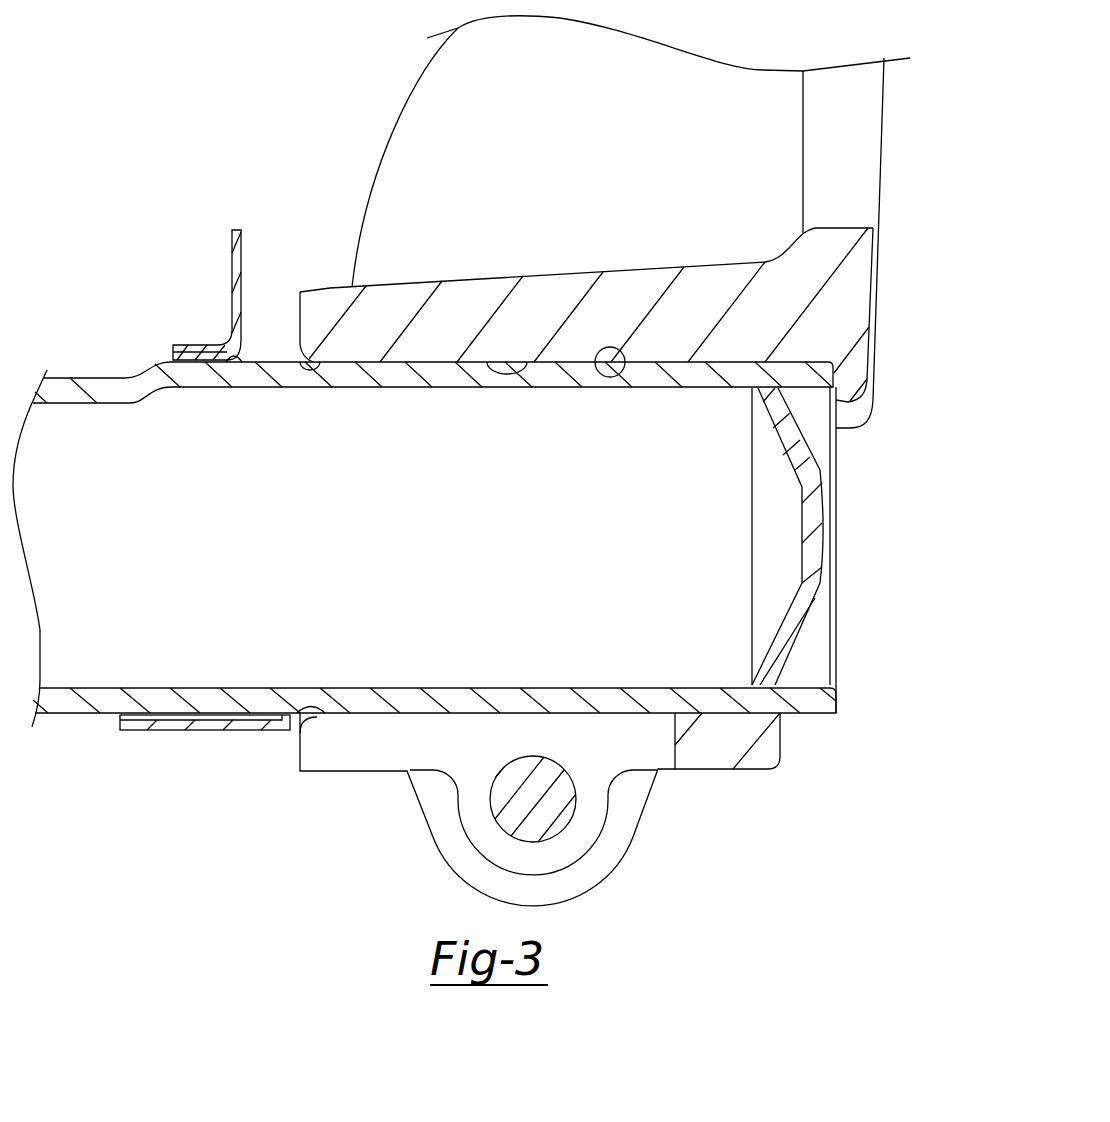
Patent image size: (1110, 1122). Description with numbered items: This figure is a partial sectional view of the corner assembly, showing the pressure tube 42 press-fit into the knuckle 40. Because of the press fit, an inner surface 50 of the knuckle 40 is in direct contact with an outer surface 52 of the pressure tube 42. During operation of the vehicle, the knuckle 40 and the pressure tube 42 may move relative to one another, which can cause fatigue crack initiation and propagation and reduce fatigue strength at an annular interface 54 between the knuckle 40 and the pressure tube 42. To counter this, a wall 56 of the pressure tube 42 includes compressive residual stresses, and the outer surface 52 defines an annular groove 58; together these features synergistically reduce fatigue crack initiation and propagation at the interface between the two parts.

The knuckle 40 is at (625, 290).
The pressure tube 42 is at (624, 372).
The inner surface 50 is at (283, 362).
The outer surface 52 is at (527, 362).
The annular interface 54 is at (410, 708).
The wall 56 is at (165, 700).
The annular groove 58 is at (305, 367).